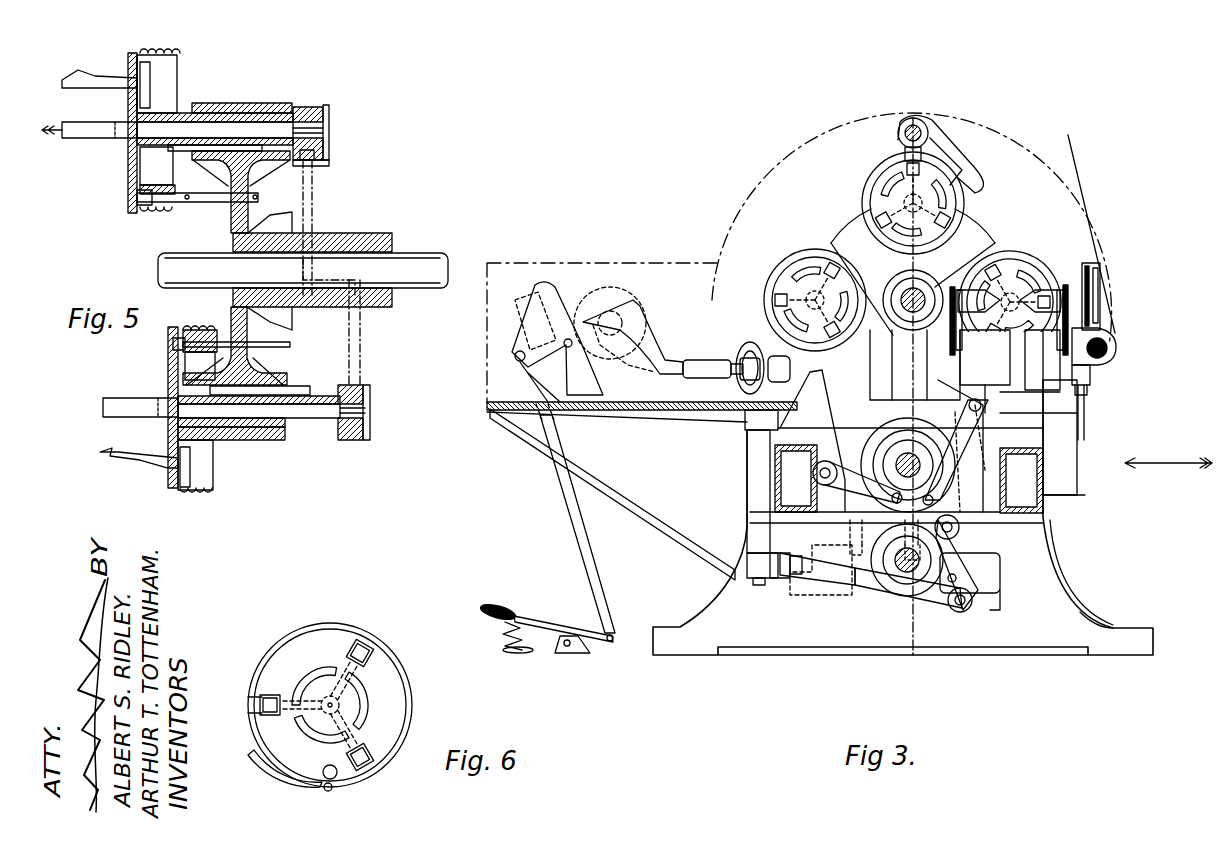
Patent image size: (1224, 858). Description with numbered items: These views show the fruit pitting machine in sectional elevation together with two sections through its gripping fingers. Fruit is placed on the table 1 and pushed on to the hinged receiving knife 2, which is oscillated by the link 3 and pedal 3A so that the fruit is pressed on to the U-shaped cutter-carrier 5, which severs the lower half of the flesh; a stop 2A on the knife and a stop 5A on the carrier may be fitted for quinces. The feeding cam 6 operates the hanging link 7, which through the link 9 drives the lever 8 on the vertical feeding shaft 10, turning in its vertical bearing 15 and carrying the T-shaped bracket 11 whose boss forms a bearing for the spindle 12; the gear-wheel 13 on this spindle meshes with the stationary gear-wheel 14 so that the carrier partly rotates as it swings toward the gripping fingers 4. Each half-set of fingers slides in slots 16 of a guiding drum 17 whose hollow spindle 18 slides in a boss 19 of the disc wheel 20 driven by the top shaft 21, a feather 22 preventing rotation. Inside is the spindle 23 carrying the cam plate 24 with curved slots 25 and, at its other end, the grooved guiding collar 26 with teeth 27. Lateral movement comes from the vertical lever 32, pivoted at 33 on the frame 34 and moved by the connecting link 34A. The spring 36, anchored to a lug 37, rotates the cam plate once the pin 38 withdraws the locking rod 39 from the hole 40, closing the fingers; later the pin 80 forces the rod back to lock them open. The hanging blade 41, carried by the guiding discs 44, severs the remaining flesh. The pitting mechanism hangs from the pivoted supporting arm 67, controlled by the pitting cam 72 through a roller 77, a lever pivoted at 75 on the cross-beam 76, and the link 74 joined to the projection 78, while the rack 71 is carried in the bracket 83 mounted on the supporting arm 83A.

In FIG. 3, the table 1 is at (487, 403).
In FIG. 3, the hinged receiving knife 2 is at (540, 295).
In FIG. 3, the stop 2A is at (518, 312).
In FIG. 3, the link 3 is at (575, 531).
In FIG. 3, the pedal 3A is at (482, 609).
In FIG. 5, the gripping fingers 4 is at (95, 76).
In FIG. 6, the gripping fingers 4 is at (258, 704).
In FIG. 3, the gripping fingers 4 is at (790, 290).
In FIG. 3, the U-shaped cutter-carrier 5 is at (890, 92).
In FIG. 3, the stop 5A is at (650, 352).
In FIG. 3, the feeding cam 6 is at (920, 598).
In FIG. 3, the hanging link 7 is at (1000, 575).
In FIG. 3, the lever 8 is at (770, 578).
In FIG. 3, the link 9 is at (850, 578).
In FIG. 3, the vertical feeding shaft 10 is at (758, 585).
In FIG. 3, the T-shaped bracket 11 is at (735, 364).
In FIG. 3, the spindle 12 is at (712, 370).
In FIG. 3, the gear-wheel 13 is at (750, 343).
In FIG. 3, the stationary gear-wheel 14 is at (770, 412).
In FIG. 3, the vertical bearing 15 is at (760, 495).
In FIG. 5, the slots 16 is at (150, 96).
In FIG. 6, the slots 16 is at (372, 650).
In FIG. 5, the guiding drum 17 is at (178, 80).
In FIG. 6, the guiding drum 17 is at (298, 775).
In FIG. 3, the guiding drum 17 is at (810, 252).
In FIG. 5, the extended hollow spindle 18 is at (275, 103).
In FIG. 5, the bosses 19 is at (242, 103).
In FIG. 3, the bosses 19 is at (967, 240).
In FIG. 5, the disc wheel 20 is at (232, 306).
In FIG. 5, the top shaft 21 is at (405, 253).
In FIG. 3, the top shaft 21 is at (933, 287).
In FIG. 5, the feather 22 is at (190, 152).
In FIG. 5, the spindle 23 is at (233, 130).
In FIG. 3, the spindle 23 is at (848, 470).
In FIG. 5, the cam plate 24 is at (128, 62).
In FIG. 6, the cam plate 24 is at (312, 625).
In FIG. 6, the curved slots 25 is at (345, 704).
In FIG. 5, the grooved guiding collar 26 is at (308, 107).
In FIG. 5, the teeth 27 is at (330, 112).
In FIG. 3, the vertical lever 32 is at (838, 402).
In FIG. 3, the pivot 33 is at (833, 548).
In FIG. 3, the frame 34 is at (1050, 598).
In FIG. 3, the connecting link 34A is at (1043, 505).
In FIG. 5, the spring 36 is at (182, 50).
In FIG. 6, the lug 37 is at (328, 791).
In FIG. 5, the pin 38 is at (258, 195).
In FIG. 5, the locking rod 39 is at (212, 203).
In FIG. 6, the hole 40 is at (334, 786).
In FIG. 3, the hanging blade 41 is at (950, 160).
In FIG. 5, the guiding discs 44 is at (314, 184).
In FIG. 3, the pivoted supporting arm 67 is at (865, 262).
In FIG. 3, the rack 71 is at (1100, 285).
In FIG. 3, the pitting cam 72 is at (1043, 455).
In FIG. 3, the link 74 is at (970, 440).
In FIG. 3, the pivot 75 is at (775, 480).
In FIG. 3, the cross-beam 76 is at (775, 462).
In FIG. 3, the roller 77 is at (932, 498).
In FIG. 3, the projection 78 is at (1072, 378).
In FIG. 5, the pin 80 is at (186, 203).
In FIG. 3, the bracket 83 is at (1112, 338).
In FIG. 3, the supporting arm 83A is at (1106, 350).